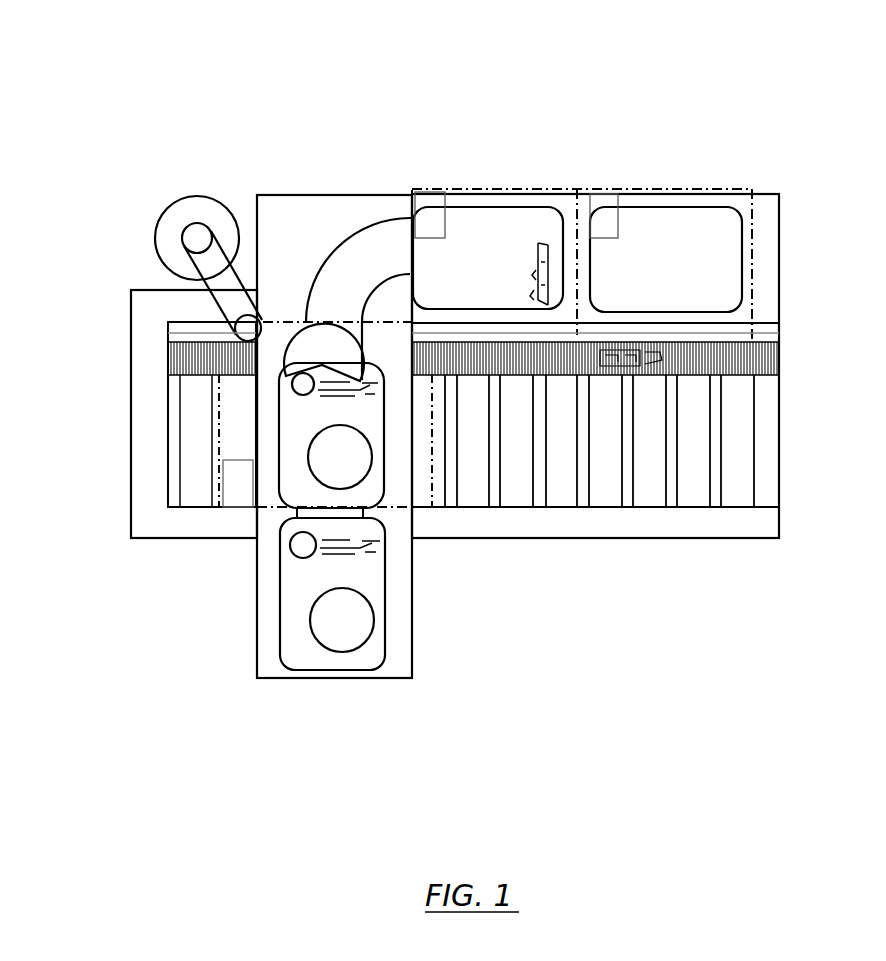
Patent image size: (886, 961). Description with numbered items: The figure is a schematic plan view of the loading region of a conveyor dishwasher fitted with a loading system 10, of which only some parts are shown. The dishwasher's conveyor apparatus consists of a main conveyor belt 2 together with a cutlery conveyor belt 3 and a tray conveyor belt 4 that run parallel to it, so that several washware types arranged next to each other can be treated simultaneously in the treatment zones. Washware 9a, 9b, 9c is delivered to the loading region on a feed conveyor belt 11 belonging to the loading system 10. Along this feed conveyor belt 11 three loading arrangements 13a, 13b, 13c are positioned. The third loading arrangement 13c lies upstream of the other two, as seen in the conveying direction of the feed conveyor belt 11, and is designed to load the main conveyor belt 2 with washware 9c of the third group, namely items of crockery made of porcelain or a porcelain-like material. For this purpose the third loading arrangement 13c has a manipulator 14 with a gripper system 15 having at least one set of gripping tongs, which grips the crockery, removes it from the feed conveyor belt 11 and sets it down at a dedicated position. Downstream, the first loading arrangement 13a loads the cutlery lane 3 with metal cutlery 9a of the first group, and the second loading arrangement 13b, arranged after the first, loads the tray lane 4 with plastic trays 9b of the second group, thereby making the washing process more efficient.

The loading system 10 is at (83, 219).
The feed conveyor belt 11 is at (328, 256).
The manipulator 14 is at (218, 285).
The gripper system 15 is at (318, 345).
The first loading arrangement 13a is at (575, 75).
The second loading arrangement 13b is at (748, 75).
The third loading arrangement 13c is at (267, 427).
The washware of the first washware group 9a is at (545, 265).
The washware of the second washware group 9b is at (475, 218).
The washware of the third washware group 9c is at (290, 548).
The tray conveyor belt 4 is at (758, 330).
The cutlery conveyor belt 3 is at (760, 362).
The main conveyor belt 2 is at (800, 388).